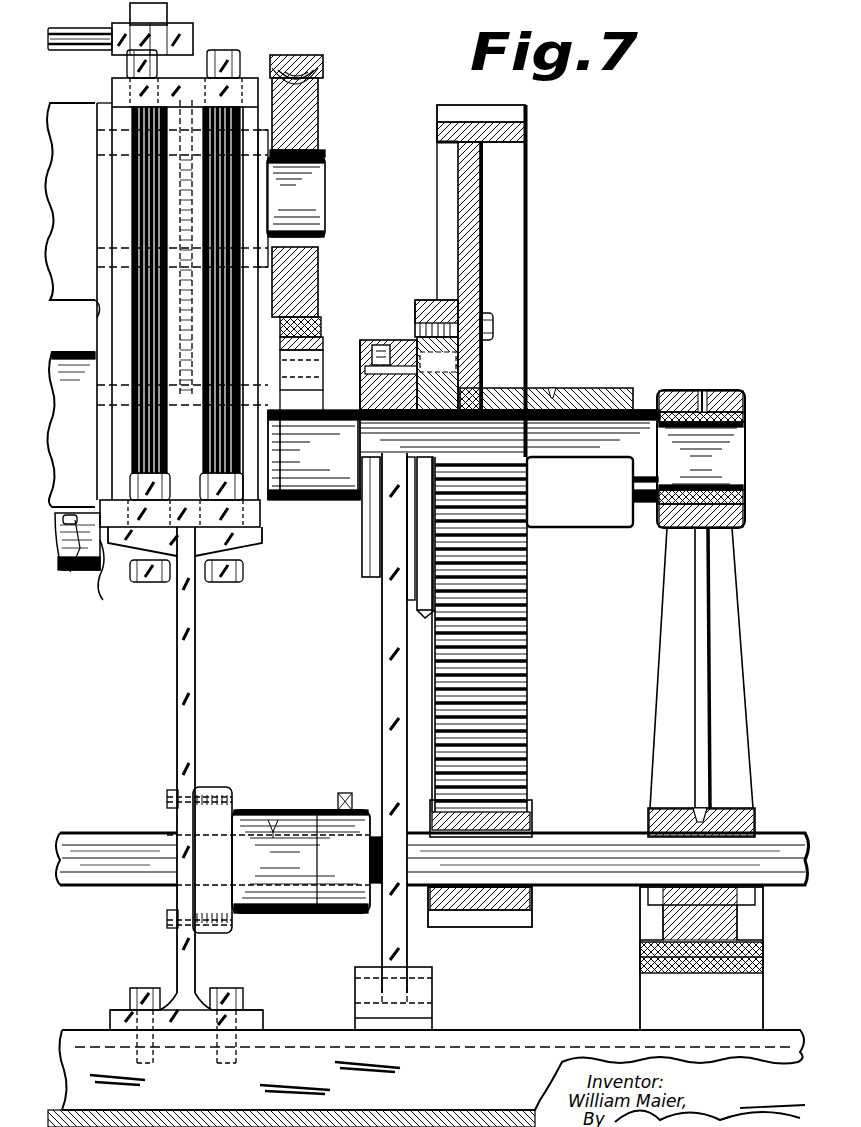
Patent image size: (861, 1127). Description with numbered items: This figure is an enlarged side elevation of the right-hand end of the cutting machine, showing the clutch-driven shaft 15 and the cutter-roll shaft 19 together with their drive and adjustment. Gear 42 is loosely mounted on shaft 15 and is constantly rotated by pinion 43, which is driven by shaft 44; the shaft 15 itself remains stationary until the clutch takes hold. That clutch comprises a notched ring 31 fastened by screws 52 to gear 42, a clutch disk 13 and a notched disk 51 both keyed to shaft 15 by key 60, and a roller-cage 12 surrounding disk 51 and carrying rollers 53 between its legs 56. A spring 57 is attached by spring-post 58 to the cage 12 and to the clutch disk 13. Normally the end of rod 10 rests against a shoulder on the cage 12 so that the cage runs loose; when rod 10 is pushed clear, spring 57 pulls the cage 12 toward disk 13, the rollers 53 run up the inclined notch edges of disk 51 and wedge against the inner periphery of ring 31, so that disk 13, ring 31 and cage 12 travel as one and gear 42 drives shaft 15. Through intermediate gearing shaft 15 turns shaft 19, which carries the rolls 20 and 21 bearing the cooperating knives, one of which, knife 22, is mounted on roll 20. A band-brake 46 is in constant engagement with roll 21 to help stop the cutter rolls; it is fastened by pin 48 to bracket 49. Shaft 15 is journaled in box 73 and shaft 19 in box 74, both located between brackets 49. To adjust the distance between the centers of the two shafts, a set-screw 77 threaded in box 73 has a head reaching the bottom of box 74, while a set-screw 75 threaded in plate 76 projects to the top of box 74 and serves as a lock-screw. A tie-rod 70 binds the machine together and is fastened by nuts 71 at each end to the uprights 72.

The rod 10 is at (395, 687).
The clutch member (roller-cage) 12 is at (390, 340).
The clutch disk 13 is at (360, 388).
The shaft 15 is at (332, 467).
The shaft 19 is at (320, 187).
The roll 20 is at (71, 429).
The roll 21 is at (70, 201).
The knife 22 is at (66, 568).
The notched ring 31 is at (447, 300).
The gear 42 is at (510, 115).
The pinion 43 is at (492, 918).
The shaft 44 is at (577, 863).
The band-brake 46 is at (323, 56).
The pin 48 is at (360, 342).
The bracket 49 is at (198, 95).
The disk 51 is at (457, 388).
The screws 52 is at (493, 323).
The rollers 53 is at (453, 362).
The legs 56 is at (653, 429).
The spring 57 is at (388, 340).
The spring-post 58 is at (378, 347).
The key 60 is at (370, 410).
The tie-rod 70 is at (60, 28).
The nuts 71 is at (182, 55).
The uprights 72 is at (152, 29).
The box 73 is at (108, 595).
The box 74 is at (96, 308).
The set-screw 75 is at (282, 58).
The plate 76 is at (112, 92).
The set-screw 77 is at (173, 330).